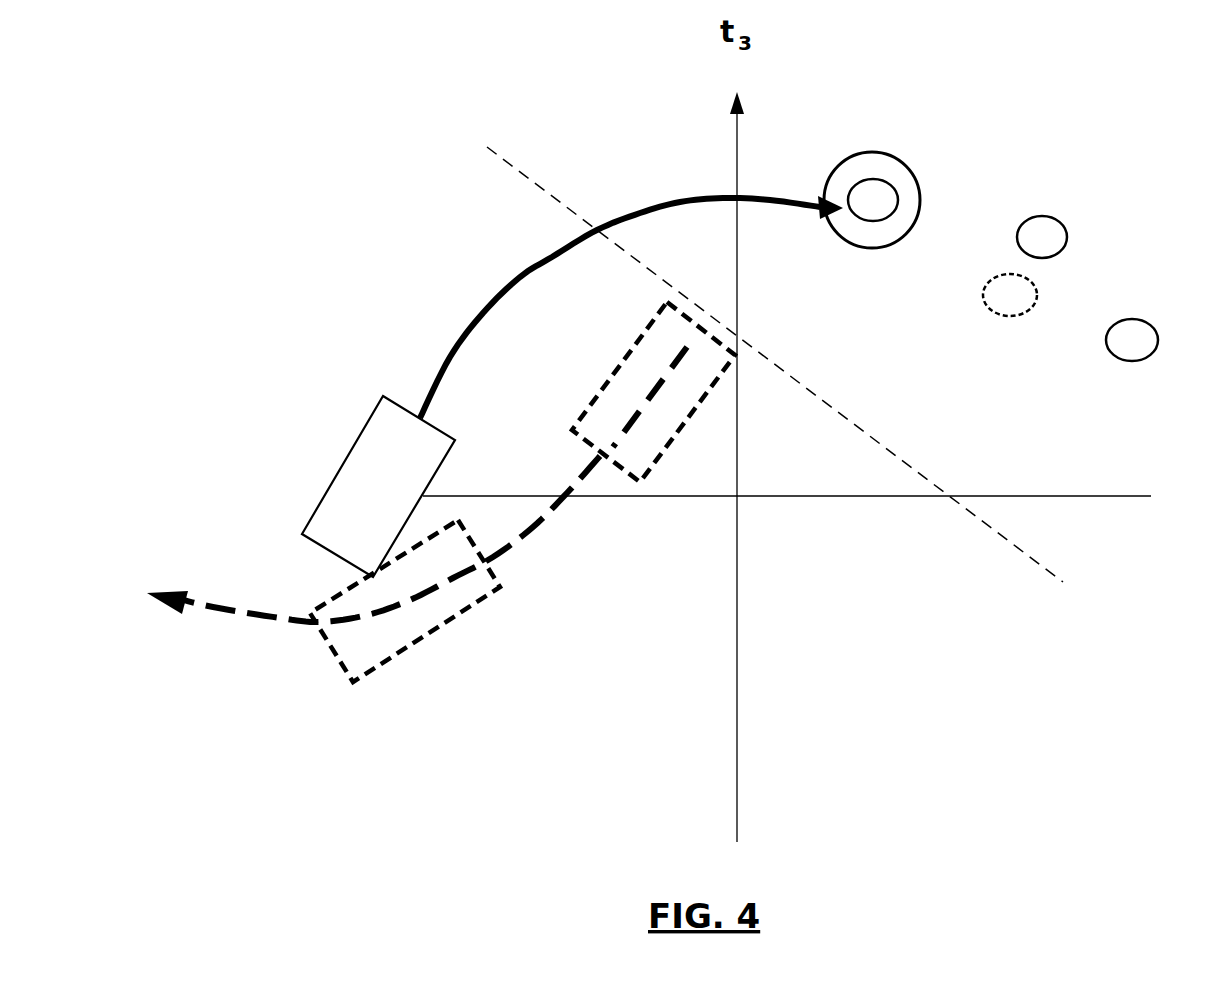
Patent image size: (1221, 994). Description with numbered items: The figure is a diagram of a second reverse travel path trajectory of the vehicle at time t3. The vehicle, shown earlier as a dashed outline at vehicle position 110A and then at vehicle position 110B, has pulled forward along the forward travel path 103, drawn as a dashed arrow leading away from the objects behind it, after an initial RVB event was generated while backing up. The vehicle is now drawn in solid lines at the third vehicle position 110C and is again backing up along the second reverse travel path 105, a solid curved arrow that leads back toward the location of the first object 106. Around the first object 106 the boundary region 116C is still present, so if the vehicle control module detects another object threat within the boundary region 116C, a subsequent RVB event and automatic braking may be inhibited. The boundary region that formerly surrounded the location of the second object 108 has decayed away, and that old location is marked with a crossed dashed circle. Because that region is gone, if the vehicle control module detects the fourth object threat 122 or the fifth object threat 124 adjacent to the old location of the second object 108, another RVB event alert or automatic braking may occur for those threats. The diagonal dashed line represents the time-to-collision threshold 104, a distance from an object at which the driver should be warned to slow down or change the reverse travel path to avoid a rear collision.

The forward travel path 103 is at (263, 613).
The time-to-collision (TTC) threshold 104 is at (1011, 545).
The second reverse travel path 105 is at (552, 257).
The first object 106 is at (870, 178).
The second object 108 is at (997, 314).
The vehicle position 110A is at (618, 372).
The vehicle position 110B is at (473, 603).
The third vehicle position 110C is at (357, 437).
The boundary region 116C is at (900, 165).
The fourth object threat 122 is at (1067, 237).
The fifth object threat 124 is at (1135, 361).